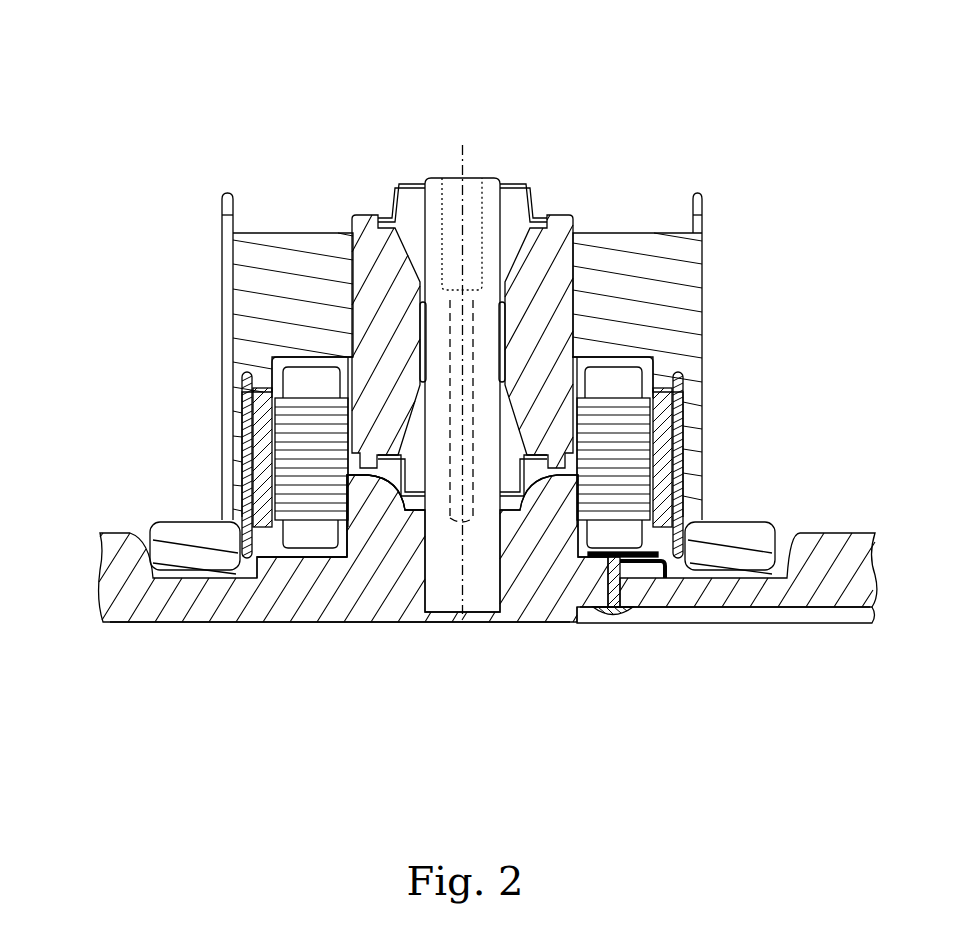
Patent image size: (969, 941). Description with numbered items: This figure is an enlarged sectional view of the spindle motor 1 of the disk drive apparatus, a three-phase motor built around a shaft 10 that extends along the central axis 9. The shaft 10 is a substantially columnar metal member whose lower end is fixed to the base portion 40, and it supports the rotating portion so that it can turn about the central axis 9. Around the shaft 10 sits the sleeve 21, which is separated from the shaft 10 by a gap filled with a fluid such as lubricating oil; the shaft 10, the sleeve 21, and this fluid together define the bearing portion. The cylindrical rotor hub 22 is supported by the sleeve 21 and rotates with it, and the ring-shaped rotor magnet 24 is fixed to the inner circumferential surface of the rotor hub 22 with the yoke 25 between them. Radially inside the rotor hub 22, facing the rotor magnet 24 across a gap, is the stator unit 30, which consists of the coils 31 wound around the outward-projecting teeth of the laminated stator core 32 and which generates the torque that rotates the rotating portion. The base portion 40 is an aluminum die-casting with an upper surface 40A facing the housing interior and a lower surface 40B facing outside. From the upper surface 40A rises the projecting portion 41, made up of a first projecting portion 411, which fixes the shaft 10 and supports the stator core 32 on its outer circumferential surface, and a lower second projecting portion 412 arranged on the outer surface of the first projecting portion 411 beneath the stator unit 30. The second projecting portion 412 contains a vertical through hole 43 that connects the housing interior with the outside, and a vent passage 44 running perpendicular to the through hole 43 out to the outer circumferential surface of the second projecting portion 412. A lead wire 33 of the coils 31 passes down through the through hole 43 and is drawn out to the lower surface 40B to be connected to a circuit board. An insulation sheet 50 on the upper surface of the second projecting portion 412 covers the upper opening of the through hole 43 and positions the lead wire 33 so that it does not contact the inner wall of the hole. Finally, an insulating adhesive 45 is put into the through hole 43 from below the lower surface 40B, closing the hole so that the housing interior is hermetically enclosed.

The spindle motor 1 is at (646, 92).
The central axis 9 is at (463, 150).
The shaft 10 is at (432, 185).
The sleeve 21 is at (370, 216).
The rotor hub 22 is at (230, 250).
The rotor magnet 24 is at (256, 430).
The yoke 25 is at (246, 395).
The stator unit 30 is at (276, 540).
The coils 31 is at (317, 382).
The stator core 32 is at (274, 378).
The lead wires 33 is at (668, 612).
The base portion 40 is at (105, 625).
The upper surface 40A is at (705, 620).
The lower surface 40B is at (398, 628).
The projecting portion 41 is at (258, 678).
The first projecting portion 411 is at (378, 527).
The second projecting portion 412 is at (305, 577).
The through hole 43 is at (610, 600).
The vent passage 44 is at (648, 570).
The adhesive 45 is at (600, 614).
The insulation sheet 50 is at (665, 550).